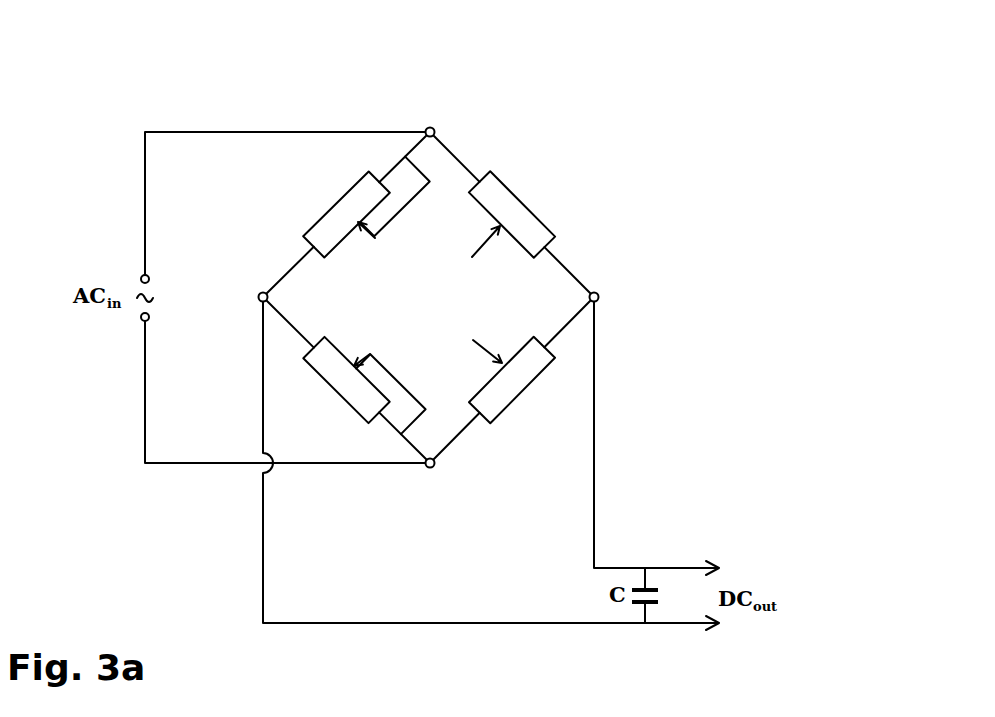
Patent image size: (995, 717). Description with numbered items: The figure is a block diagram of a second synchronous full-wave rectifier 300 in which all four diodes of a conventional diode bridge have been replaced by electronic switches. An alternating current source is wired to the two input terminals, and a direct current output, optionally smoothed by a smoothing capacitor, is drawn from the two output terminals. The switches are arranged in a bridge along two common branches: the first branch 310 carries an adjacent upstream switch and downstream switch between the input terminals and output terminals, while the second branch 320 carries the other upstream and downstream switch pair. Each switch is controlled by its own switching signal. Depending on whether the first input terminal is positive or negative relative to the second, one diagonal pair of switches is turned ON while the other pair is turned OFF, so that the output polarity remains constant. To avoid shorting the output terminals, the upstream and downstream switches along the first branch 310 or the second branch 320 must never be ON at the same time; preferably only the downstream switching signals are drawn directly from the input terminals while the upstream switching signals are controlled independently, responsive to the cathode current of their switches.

The second synchronous full-wave rectifier 300 is at (482, 118).
The first branch 310 is at (590, 205).
The second branch 320 is at (473, 445).